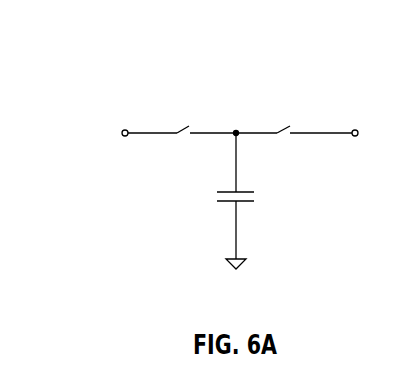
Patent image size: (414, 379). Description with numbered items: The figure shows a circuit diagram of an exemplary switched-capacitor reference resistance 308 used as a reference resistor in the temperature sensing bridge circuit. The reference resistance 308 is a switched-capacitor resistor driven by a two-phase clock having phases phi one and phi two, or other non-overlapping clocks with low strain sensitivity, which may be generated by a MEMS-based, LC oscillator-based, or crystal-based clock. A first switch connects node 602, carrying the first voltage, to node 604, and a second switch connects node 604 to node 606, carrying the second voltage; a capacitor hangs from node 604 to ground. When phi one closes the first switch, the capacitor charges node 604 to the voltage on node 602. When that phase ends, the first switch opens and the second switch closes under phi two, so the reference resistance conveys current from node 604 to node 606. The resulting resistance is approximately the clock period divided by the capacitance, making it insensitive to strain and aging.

The reference resistance 308 is at (108, 75).
The node 602 is at (122, 131).
The node 604 is at (238, 131).
The node 606 is at (358, 130).